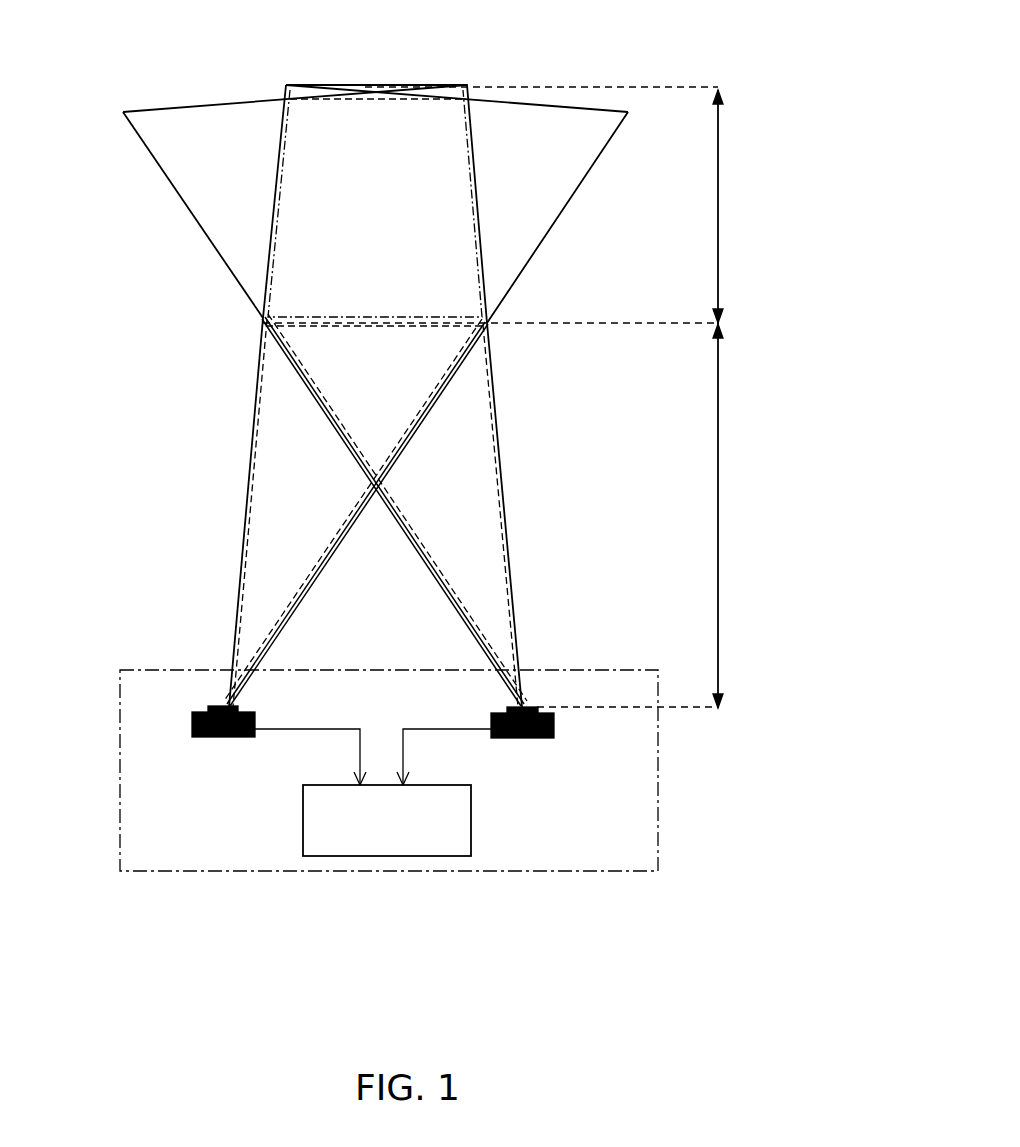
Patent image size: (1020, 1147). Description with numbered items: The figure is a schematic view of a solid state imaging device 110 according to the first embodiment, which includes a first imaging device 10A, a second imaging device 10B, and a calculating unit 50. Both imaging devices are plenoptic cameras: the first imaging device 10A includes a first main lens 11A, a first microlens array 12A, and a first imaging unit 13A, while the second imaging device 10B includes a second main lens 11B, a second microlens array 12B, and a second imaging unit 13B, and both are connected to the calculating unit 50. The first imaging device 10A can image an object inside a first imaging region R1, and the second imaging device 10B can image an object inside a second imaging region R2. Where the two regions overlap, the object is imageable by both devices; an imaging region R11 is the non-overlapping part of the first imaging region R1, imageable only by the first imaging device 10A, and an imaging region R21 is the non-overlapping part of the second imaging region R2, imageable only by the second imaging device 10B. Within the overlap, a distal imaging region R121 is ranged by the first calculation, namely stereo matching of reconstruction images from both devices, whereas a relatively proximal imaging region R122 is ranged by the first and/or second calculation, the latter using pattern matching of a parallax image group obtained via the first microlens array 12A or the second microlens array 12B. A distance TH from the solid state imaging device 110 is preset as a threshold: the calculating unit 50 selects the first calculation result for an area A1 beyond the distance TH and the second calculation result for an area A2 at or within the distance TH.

The first imaging region R1 is at (292, 356).
The imaging region R11 is at (253, 446).
The imaging region R121 is at (323, 97).
The imaging region R122 is at (262, 376).
The second imaging region R2 is at (457, 396).
The imaging region R21 is at (492, 372).
The area A1 is at (718, 207).
The area A2 is at (718, 490).
The distance TH is at (735, 324).
The solid state imaging device 110 is at (658, 770).
The first imaging device 10A is at (182, 795).
The second imaging device 10B is at (562, 792).
The first main lens 11A is at (182, 840).
The first microlens array 12A is at (182, 840).
The first imaging unit 13A is at (222, 738).
The second main lens 11B is at (562, 831).
The second microlens array 12B is at (562, 831).
The second imaging unit 13B is at (527, 738).
The calculating unit 50 is at (390, 856).